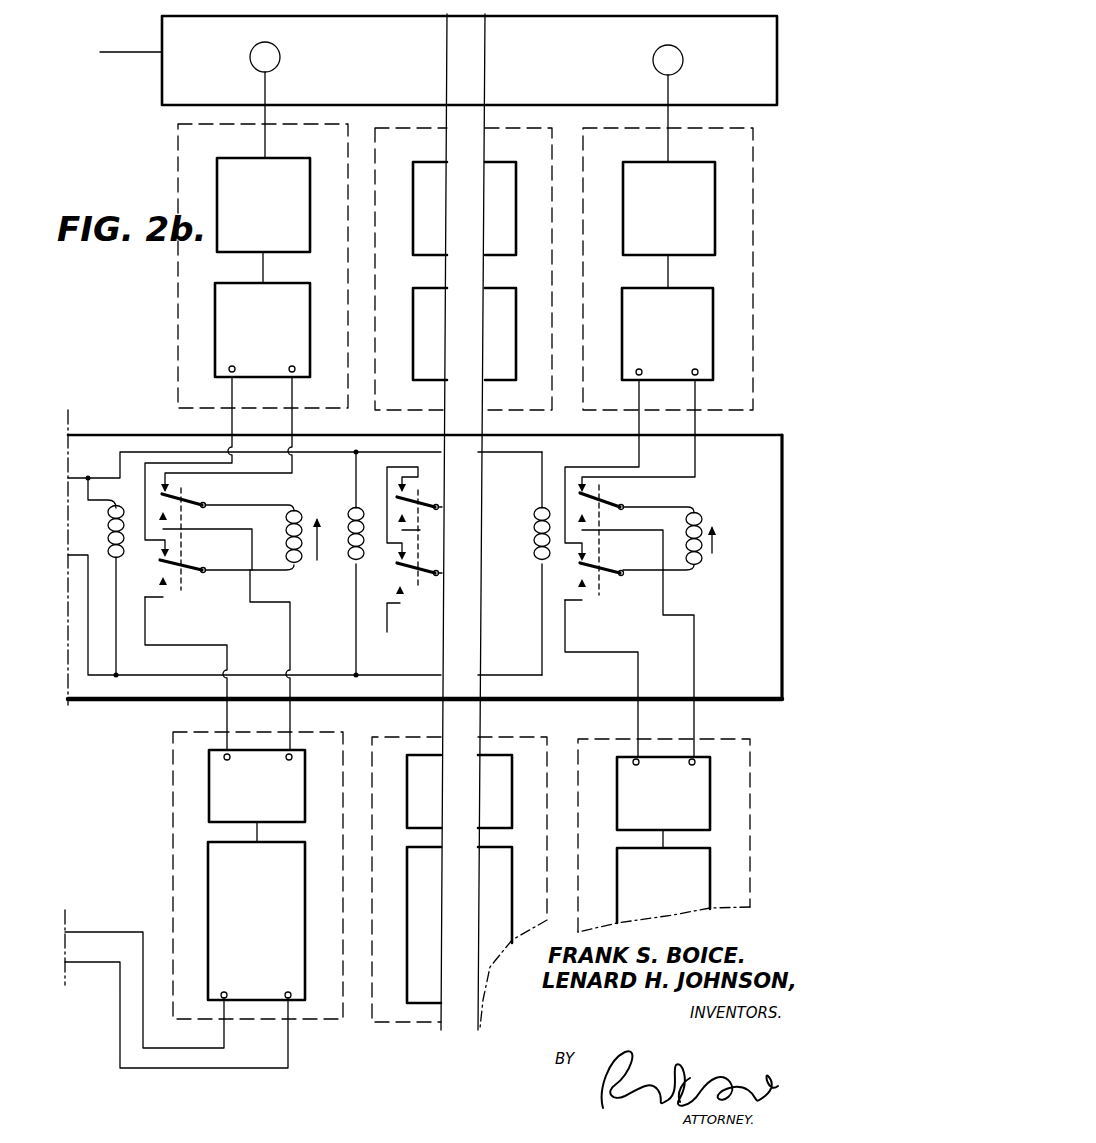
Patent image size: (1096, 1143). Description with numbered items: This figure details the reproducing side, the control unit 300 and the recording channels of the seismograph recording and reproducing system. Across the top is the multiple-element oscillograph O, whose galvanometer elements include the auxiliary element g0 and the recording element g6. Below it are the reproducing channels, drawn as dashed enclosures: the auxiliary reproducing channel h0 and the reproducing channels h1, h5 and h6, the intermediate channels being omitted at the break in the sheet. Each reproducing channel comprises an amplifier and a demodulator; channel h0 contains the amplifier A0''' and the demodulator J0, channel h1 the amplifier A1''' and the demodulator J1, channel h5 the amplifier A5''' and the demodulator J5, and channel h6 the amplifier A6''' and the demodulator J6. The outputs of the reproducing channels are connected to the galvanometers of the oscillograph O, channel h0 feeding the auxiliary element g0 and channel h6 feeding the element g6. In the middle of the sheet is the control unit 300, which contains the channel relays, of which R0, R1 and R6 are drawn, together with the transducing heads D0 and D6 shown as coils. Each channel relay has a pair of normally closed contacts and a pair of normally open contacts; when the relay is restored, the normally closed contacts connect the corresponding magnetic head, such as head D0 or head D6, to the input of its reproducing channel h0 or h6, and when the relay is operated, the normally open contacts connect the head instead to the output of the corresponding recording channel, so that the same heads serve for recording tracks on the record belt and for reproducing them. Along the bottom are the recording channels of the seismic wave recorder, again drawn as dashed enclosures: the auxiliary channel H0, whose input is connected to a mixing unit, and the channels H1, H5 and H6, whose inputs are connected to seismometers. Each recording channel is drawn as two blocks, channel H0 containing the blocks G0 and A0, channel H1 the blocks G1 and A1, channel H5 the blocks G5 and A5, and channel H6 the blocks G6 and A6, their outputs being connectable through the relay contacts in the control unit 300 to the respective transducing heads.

The multiple-element oscillograph O is at (438, 60).
The auxiliary element g0 is at (265, 100).
The recording element g6 is at (668, 103).
The auxiliary reproducing channel h0 is at (178, 172).
The reproducing channel h1 is at (375, 190).
The reproducing channel h5 is at (552, 250).
The reproducing channel h6 is at (583, 190).
The amplifier A0''' is at (263, 205).
The amplifier A1''' is at (430, 208).
The amplifier A5''' is at (500, 208).
The amplifier A6''' is at (669, 208).
The demodulator J0 is at (262, 314).
The demodulator J1 is at (430, 334).
The demodulator J5 is at (500, 334).
The demodulator J6 is at (667, 317).
The control unit 300 is at (137, 699).
The channel relay R0 is at (115, 576).
The channel relay R1 is at (364, 563).
The channel relay R6 is at (550, 563).
The auxiliary transducing device D0 is at (317, 518).
The transducing head D6 is at (714, 527).
The auxiliary channel H0 is at (173, 782).
The recording channel H1 is at (372, 747).
The recording channel H5 is at (547, 750).
The recording channel H6 is at (578, 750).
The gate G0 is at (257, 786).
The gate G1 is at (424, 791).
The gate G5 is at (495, 791).
The gate G6 is at (663, 793).
The amplifier A0 is at (185, 945).
The amplifier A1 is at (424, 925).
The amplifier A5 is at (495, 895).
The amplifier A6 is at (663, 876).